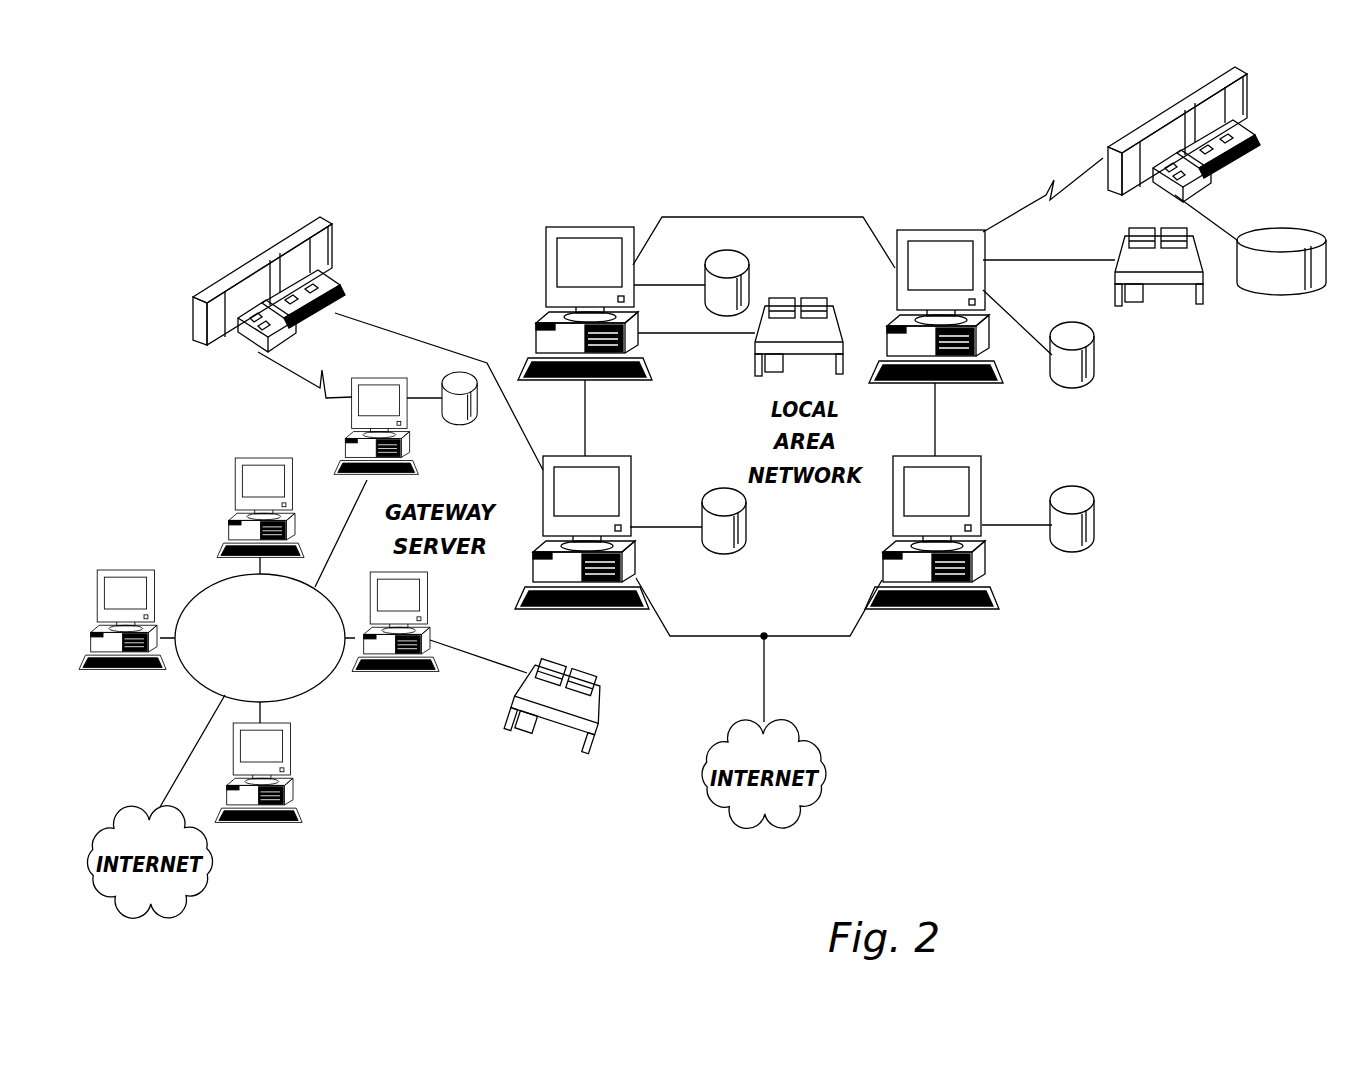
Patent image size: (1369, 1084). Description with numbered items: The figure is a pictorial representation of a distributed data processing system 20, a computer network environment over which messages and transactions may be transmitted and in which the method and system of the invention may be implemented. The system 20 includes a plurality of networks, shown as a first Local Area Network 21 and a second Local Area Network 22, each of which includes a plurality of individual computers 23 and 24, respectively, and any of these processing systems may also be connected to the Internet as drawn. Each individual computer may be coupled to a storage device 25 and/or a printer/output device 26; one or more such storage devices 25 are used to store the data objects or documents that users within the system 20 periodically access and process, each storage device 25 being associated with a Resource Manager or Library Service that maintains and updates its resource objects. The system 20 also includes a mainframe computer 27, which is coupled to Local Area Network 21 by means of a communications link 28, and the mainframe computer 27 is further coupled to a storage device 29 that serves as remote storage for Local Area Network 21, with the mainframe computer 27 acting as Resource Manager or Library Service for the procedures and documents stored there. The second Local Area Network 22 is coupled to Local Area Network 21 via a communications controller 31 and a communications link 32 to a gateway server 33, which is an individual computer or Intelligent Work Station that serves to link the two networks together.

The distributed data processing system 20 is at (718, 165).
The Local Area Network 21 is at (796, 641).
The Local Area Network 22 is at (195, 683).
The individual computer 23 is at (565, 227).
The individual computer 24 is at (255, 458).
The storage device 25 is at (752, 272).
The printer/output device 26 is at (800, 300).
The mainframe computer 27 is at (1180, 98).
The communications link 28 is at (1048, 183).
The storage device 29 is at (1285, 225).
The communications controller 31 is at (332, 223).
The communications link 32 is at (293, 377).
The gateway server 33 is at (365, 378).